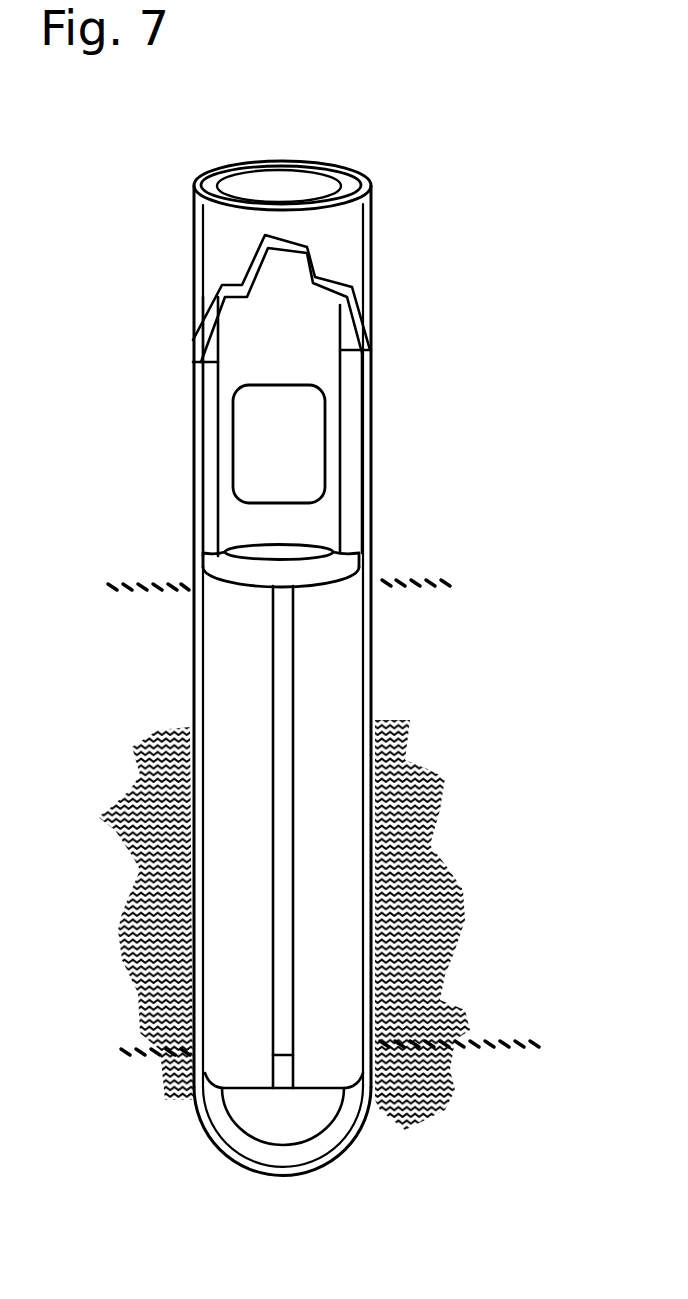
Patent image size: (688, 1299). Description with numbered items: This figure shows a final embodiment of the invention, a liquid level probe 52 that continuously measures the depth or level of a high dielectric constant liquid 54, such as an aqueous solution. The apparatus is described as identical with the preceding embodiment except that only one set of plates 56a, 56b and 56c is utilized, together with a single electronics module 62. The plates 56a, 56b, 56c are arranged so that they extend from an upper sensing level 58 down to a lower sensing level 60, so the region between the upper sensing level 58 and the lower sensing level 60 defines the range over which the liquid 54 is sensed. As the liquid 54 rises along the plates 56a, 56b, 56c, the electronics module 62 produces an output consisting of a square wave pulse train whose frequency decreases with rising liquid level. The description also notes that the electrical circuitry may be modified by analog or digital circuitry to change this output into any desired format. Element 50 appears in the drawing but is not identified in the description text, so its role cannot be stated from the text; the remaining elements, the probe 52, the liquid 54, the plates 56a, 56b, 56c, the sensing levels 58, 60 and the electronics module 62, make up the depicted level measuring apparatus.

The sample tube 50 is at (175, 200).
The probe 52 is at (366, 168).
The high dielectric constant liquid 54 is at (455, 877).
The plate 56a is at (220, 632).
The plate 56b is at (313, 545).
The plate 56c is at (365, 633).
The upper sensing level 58 is at (402, 583).
The lower sensing level 60 is at (512, 1040).
The electronics module 62 is at (250, 413).